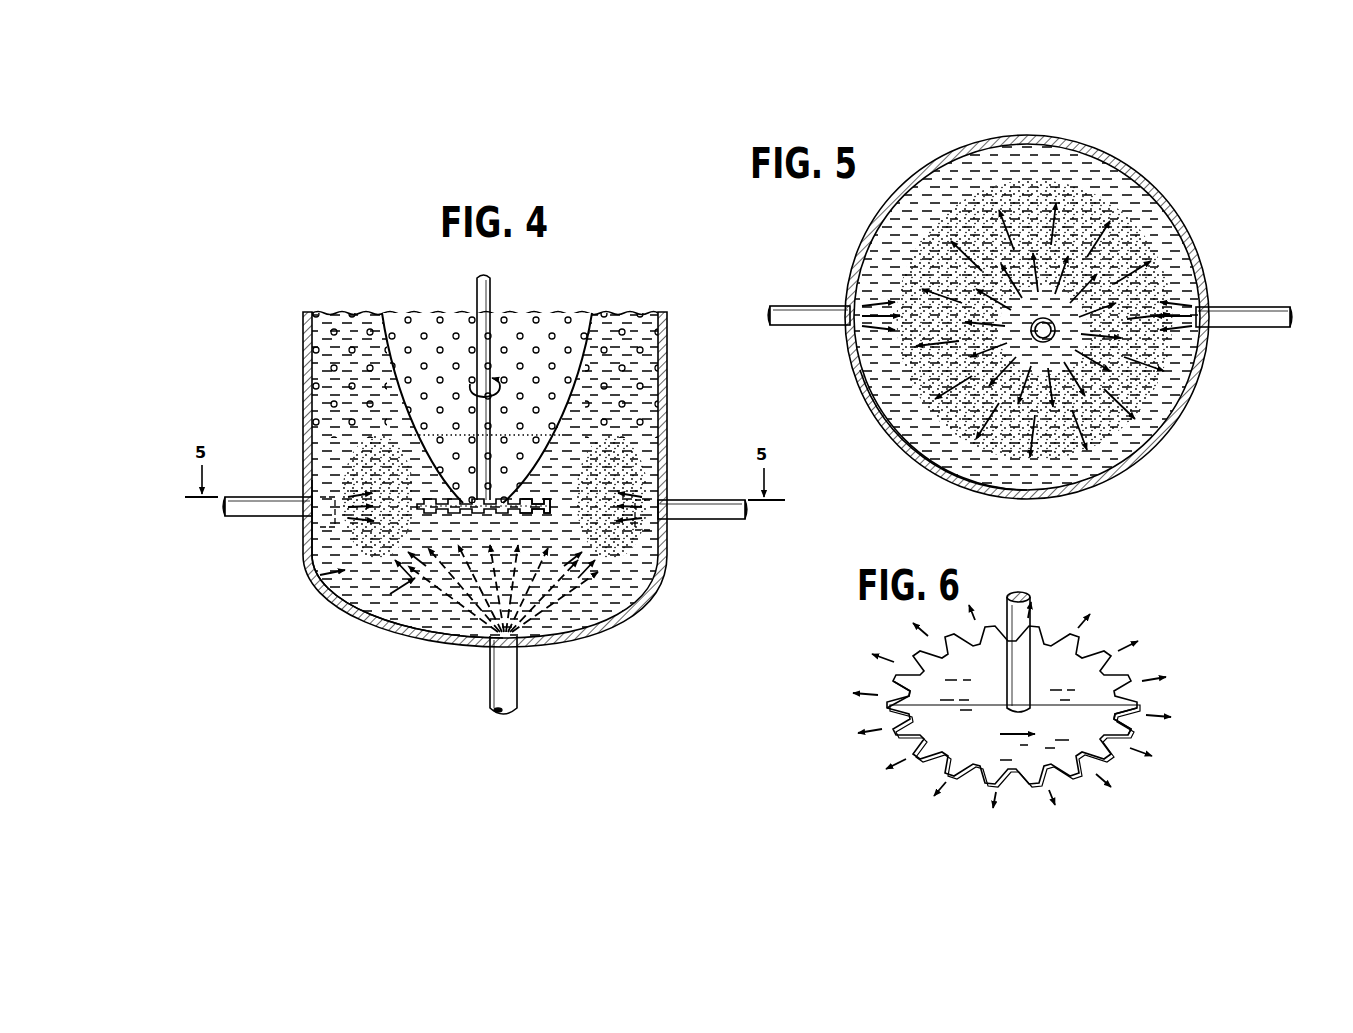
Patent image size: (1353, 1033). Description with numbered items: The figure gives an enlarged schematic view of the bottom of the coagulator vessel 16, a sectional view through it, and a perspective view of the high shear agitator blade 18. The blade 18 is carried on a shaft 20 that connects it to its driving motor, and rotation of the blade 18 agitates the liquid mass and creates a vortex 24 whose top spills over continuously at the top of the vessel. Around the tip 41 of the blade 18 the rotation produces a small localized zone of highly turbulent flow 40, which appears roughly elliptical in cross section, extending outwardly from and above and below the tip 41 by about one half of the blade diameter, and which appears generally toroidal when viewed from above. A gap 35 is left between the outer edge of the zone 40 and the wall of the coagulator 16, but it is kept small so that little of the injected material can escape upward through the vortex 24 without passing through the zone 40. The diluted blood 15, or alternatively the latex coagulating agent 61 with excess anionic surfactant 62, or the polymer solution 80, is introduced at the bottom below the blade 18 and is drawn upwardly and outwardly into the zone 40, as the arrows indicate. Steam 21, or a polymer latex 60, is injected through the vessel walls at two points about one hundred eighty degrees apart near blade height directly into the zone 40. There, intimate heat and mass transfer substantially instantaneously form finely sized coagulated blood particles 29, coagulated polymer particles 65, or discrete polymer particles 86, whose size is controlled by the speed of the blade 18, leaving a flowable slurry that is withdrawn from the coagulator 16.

In FIG. 4, the diluted blood 15 is at (577, 740).
In FIG. 5, the diluted blood 15 is at (1113, 187).
In FIG. 4, the coagulator vessel 16 is at (635, 600).
In FIG. 5, the coagulator vessel 16 is at (1172, 213).
In FIG. 4, the high shear agitator blade 18 is at (483, 512).
In FIG. 6, the high shear agitator blade 18 is at (1147, 689).
In FIG. 4, the shaft 20 is at (487, 283).
In FIG. 6, the shaft 20 is at (1022, 620).
In FIG. 4, the steam 21 is at (215, 508).
In FIG. 5, the steam 21 is at (762, 313).
In FIG. 4, the vortex 24 is at (387, 343).
In FIG. 4, the coagulated blood particles 29 is at (433, 475).
In FIG. 4, the gap 35 is at (330, 555).
In FIG. 5, the gap 35 is at (897, 388).
In FIG. 4, the turbulent zone 40 is at (372, 577).
In FIG. 5, the turbulent zone 40 is at (1133, 407).
In FIG. 4, the blade tip 41 is at (545, 505).
In FIG. 6, the blade tip 41 is at (905, 705).
In FIG. 4, the polymer latex 60 is at (797, 512).
In FIG. 5, the polymer latex 60 is at (1338, 317).
In FIG. 4, the latex coagulating agent 61 is at (584, 734).
In FIG. 5, the latex coagulating agent 61 is at (1128, 200).
In FIG. 4, the excess anionic surfactant 62 is at (584, 734).
In FIG. 5, the excess anionic surfactant 62 is at (1128, 209).
In FIG. 4, the coagulated polymer particles 65 is at (475, 475).
In FIG. 4, the polymer solution 80 is at (445, 755).
In FIG. 5, the polymer solution 80 is at (1103, 218).
In FIG. 4, the polymer particles 86 is at (325, 392).